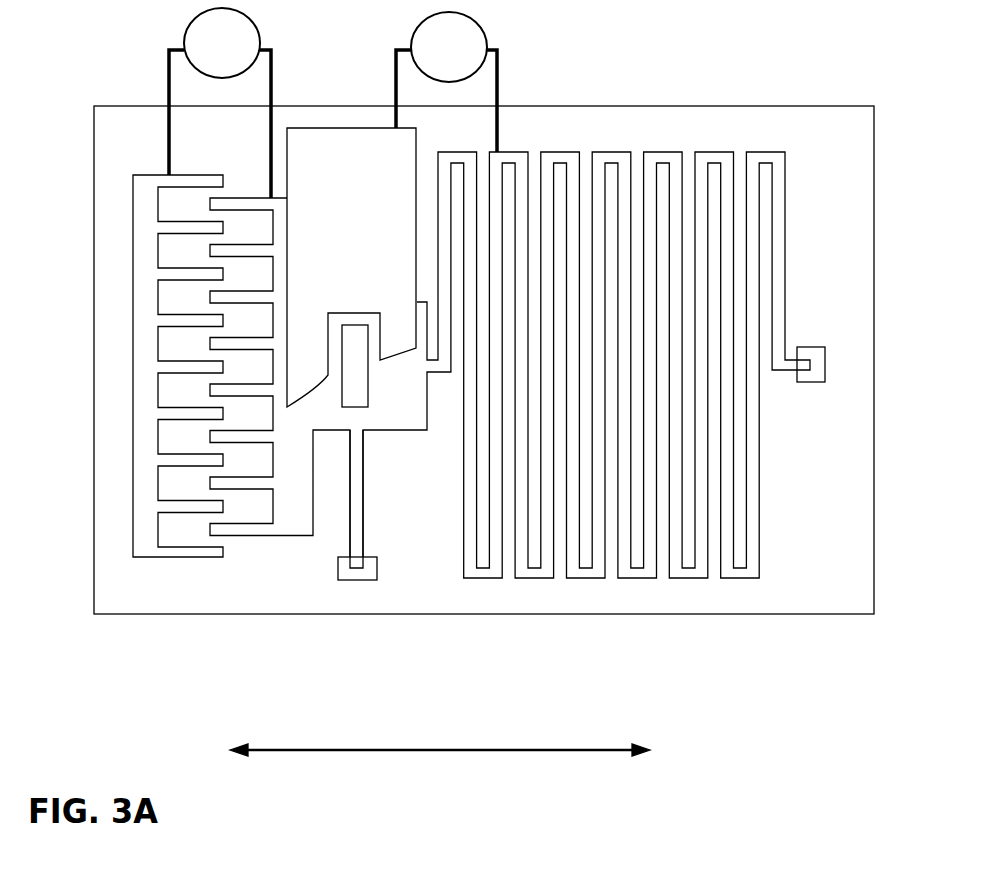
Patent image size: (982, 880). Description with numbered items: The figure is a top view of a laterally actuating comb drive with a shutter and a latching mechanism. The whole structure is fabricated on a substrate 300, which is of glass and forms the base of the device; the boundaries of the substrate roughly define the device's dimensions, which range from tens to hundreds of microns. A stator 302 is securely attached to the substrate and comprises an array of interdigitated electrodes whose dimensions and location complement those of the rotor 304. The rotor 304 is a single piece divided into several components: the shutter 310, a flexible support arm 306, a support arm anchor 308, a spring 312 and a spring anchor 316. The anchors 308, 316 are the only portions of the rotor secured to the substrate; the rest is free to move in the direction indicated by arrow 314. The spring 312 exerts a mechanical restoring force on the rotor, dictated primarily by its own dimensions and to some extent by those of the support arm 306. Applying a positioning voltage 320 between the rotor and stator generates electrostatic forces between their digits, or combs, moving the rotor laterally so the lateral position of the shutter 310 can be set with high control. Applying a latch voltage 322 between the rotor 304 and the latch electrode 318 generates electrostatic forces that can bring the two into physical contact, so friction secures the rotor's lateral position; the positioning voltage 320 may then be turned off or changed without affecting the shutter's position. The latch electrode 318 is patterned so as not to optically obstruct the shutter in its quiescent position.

The substrate 300 is at (112, 600).
The stator 302 is at (171, 553).
The rotor 304 is at (242, 536).
The flexible support arm 306 is at (350, 475).
The support arm anchor 308 is at (353, 580).
The shutter 310 is at (363, 383).
The spring 312 is at (535, 578).
The arrow 314 is at (604, 750).
The spring anchor 316 is at (808, 382).
The latch electrode 318 is at (332, 146).
The positioning voltage 320 is at (178, 26).
The latch voltage 322 is at (493, 38).